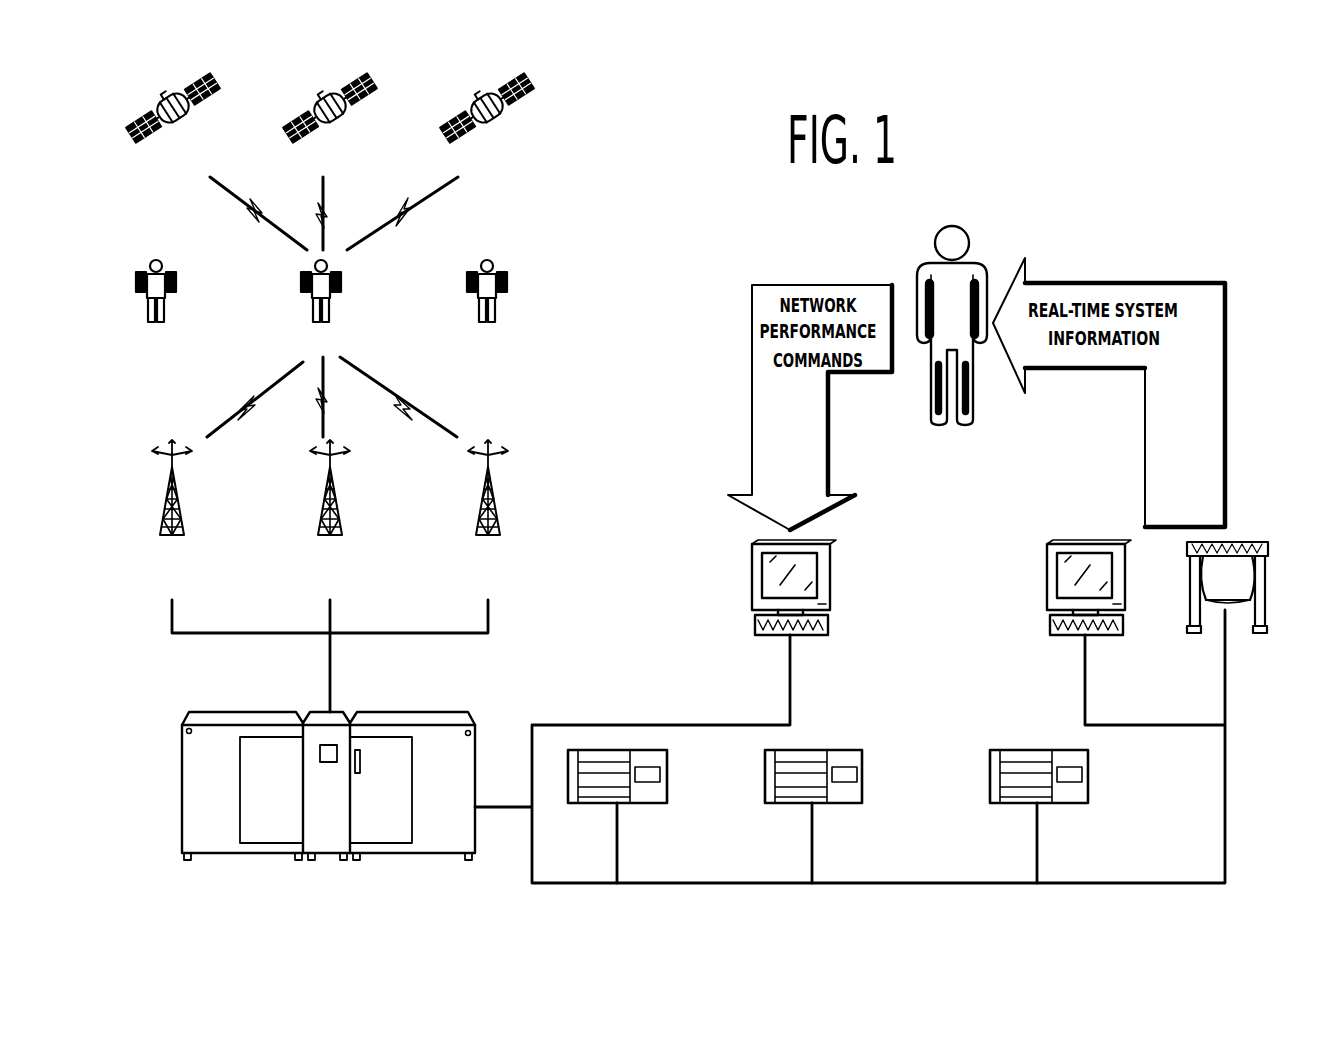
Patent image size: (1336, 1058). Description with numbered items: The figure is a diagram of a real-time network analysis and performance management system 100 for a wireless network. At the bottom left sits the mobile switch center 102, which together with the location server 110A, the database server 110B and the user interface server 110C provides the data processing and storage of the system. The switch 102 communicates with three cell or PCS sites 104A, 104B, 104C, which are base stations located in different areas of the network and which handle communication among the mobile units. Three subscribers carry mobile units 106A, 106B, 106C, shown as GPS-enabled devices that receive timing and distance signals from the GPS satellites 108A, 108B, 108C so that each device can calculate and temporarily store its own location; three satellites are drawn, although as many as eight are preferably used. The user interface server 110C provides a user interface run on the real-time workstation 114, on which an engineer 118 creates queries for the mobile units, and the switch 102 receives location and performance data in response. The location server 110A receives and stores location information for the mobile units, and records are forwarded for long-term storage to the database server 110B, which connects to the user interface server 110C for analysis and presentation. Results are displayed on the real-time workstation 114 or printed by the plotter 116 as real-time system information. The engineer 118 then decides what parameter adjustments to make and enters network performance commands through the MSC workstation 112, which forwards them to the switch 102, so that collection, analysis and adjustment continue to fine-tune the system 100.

The real-time network analysis and performance management system 100 is at (1184, 186).
The mobile switch center 102 is at (182, 765).
The cell or PCS site 104A is at (187, 504).
The cell or PCS site 104B is at (349, 509).
The cell or PCS site 104C is at (510, 516).
The mobile unit 106A is at (183, 281).
The mobile unit 106B is at (345, 286).
The mobile unit 106C is at (505, 295).
The GPS satellite 108A is at (218, 82).
The GPS satellite 108B is at (380, 86).
The GPS satellite 108C is at (543, 90).
The location server 110A is at (667, 768).
The database server 110B is at (862, 772).
The user interface server 110C is at (1088, 782).
The MSC workstation 112 is at (830, 569).
The real-time workstation 114 is at (1047, 585).
The plotter 116 is at (1268, 552).
The engineer 118 is at (963, 229).